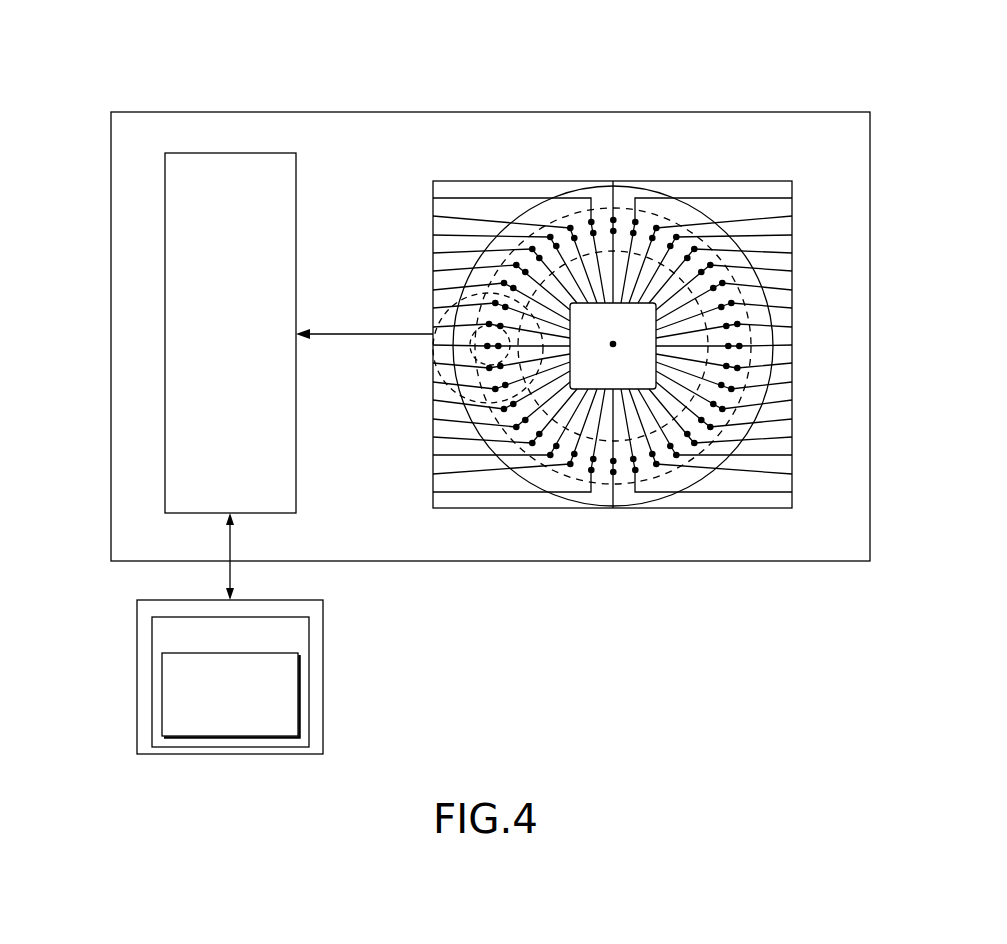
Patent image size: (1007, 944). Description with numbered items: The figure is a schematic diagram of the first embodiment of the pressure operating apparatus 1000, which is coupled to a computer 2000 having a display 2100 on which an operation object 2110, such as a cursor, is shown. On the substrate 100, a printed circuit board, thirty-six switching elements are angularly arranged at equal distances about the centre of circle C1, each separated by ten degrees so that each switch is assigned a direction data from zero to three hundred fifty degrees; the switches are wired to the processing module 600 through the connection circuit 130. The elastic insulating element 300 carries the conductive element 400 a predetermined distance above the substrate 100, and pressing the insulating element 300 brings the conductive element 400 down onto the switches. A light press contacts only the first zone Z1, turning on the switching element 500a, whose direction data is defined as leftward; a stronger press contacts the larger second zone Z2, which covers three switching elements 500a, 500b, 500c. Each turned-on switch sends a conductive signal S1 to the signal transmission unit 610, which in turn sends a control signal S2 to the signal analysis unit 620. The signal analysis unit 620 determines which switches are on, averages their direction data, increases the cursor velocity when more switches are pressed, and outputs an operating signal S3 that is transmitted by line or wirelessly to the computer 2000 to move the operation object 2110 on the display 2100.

The pressure operating apparatus 1000 is at (933, 137).
The substrate 100 is at (858, 436).
The connection circuit 130 is at (792, 243).
The insulating element 300 is at (767, 302).
The conductive element 400 is at (750, 353).
The switching element 500a is at (486, 323).
The switching element 500b is at (500, 283).
The switching element 500c is at (501, 411).
The processing module 600 is at (152, 218).
The signal analysis unit 620 is at (183, 262).
The signal transmission unit 610 is at (623, 390).
The centre of circle C1 is at (609, 344).
The first zone Z1 is at (428, 416).
The second zone Z2 is at (428, 377).
The conductive signal S1 is at (640, 228).
The control signal S2 is at (331, 334).
The operating signal S3 is at (228, 543).
The computer 2000 is at (145, 612).
The display 2100 is at (160, 647).
The operation object 2110 is at (172, 675).